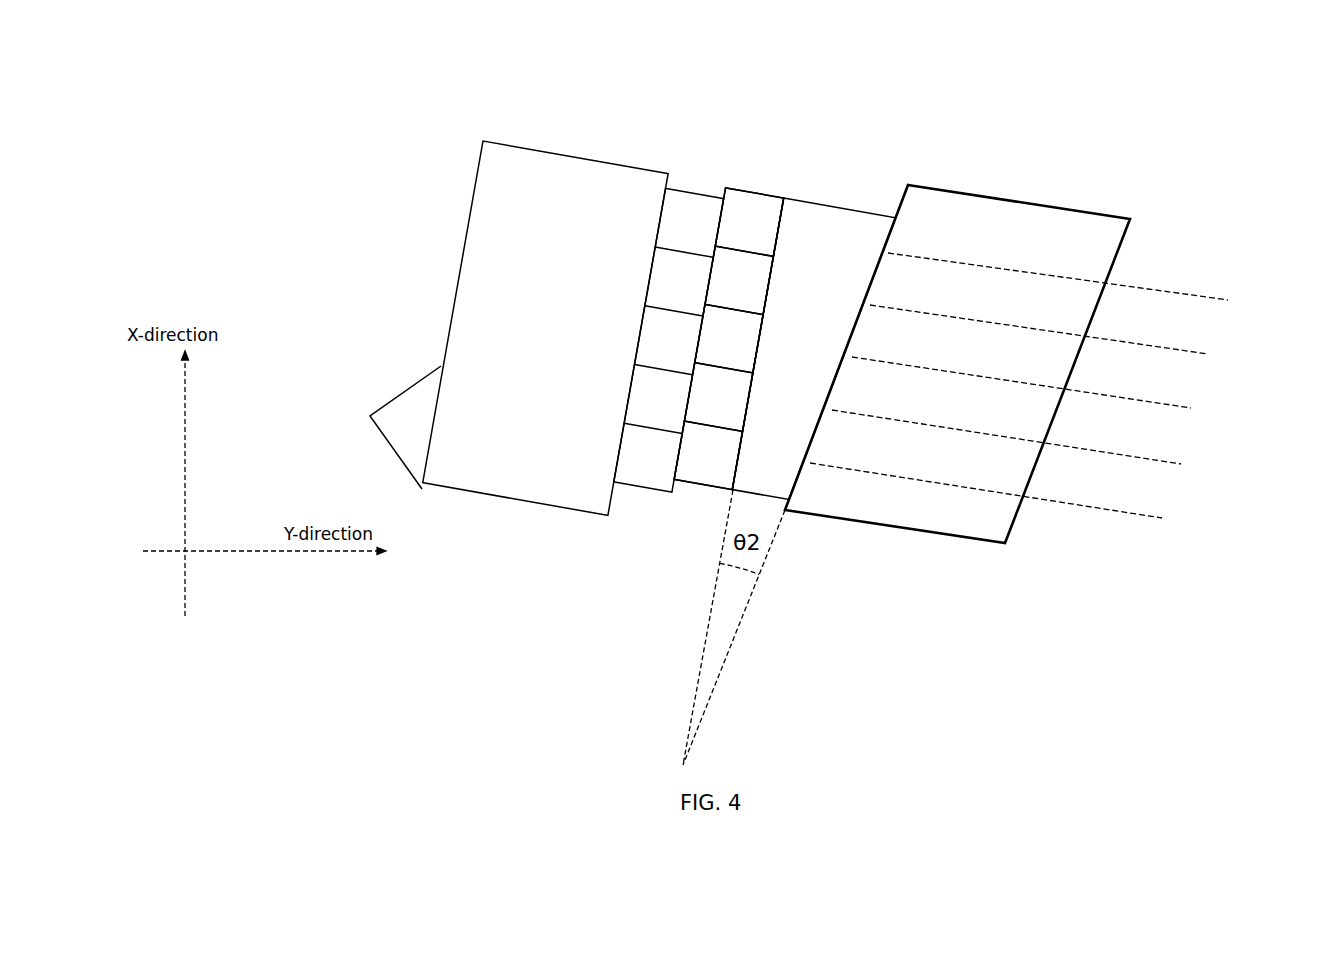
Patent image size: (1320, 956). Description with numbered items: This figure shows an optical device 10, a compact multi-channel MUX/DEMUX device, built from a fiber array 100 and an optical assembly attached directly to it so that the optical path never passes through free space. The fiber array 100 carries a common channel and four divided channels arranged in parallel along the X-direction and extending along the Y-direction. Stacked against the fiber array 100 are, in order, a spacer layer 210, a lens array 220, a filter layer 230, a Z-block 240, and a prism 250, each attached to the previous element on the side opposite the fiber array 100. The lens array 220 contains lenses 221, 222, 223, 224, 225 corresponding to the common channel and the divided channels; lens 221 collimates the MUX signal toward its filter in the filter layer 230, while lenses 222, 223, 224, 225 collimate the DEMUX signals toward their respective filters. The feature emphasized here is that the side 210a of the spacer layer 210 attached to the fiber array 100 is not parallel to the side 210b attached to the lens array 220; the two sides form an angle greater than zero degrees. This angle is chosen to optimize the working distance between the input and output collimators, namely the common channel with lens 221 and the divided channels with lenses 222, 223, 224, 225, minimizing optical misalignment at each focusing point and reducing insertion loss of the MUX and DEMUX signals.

The optical device 10 is at (1245, 106).
The fiber array 100 is at (1012, 190).
The spacer layer 210 is at (821, 286).
The side of the spacer layer 210a is at (843, 338).
The side of the spacer layer 210b is at (750, 447).
The lens array 220 is at (749, 275).
The lens 221 is at (725, 467).
The lens 222 is at (735, 410).
The lens 223 is at (745, 352).
The lens 224 is at (757, 293).
The lens 225 is at (768, 235).
The filter layer 230 is at (691, 178).
The Z-block 240 is at (472, 170).
The prism 250 is at (380, 398).